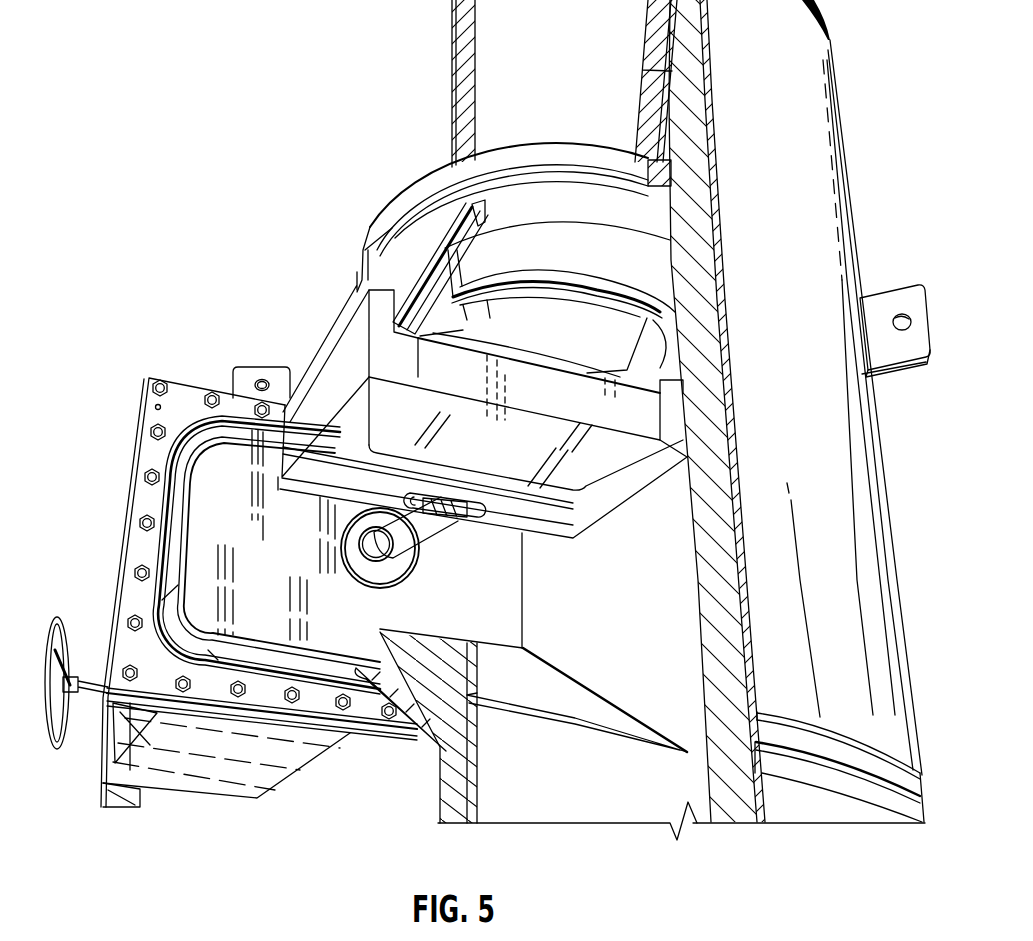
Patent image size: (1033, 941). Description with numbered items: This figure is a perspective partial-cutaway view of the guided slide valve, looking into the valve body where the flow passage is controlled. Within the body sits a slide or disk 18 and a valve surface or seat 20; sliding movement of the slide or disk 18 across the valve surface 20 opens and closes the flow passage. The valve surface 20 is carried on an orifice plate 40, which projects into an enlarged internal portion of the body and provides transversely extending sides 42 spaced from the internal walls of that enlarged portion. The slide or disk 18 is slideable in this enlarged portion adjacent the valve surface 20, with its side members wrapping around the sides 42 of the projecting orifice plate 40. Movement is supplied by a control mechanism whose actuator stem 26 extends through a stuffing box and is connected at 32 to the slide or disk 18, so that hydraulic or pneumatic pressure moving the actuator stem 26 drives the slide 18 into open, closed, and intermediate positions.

The slide or disk 18 is at (390, 334).
The valve surface or seat 20 is at (423, 330).
The actuator stem 26 is at (408, 548).
The connection 32 is at (460, 510).
The orifice plate 40 is at (420, 218).
The transversely extending sides 42 is at (422, 278).